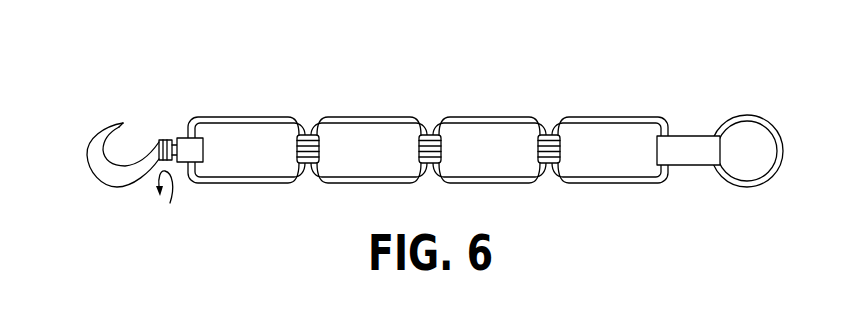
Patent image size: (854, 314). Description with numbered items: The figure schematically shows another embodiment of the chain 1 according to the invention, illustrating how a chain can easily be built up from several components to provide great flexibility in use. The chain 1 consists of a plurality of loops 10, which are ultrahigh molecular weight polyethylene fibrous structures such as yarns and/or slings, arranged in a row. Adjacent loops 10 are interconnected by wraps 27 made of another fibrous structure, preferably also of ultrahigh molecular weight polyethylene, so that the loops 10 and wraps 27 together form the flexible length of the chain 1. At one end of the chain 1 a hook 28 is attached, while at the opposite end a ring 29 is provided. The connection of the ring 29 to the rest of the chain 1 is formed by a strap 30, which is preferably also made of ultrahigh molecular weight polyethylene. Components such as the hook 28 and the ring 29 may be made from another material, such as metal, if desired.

The chain 1 is at (104, 73).
The loops 10 is at (248, 117).
The wraps 27 is at (297, 148).
The hook 28 is at (120, 177).
The ring 29 is at (745, 115).
The strap 30 is at (690, 142).